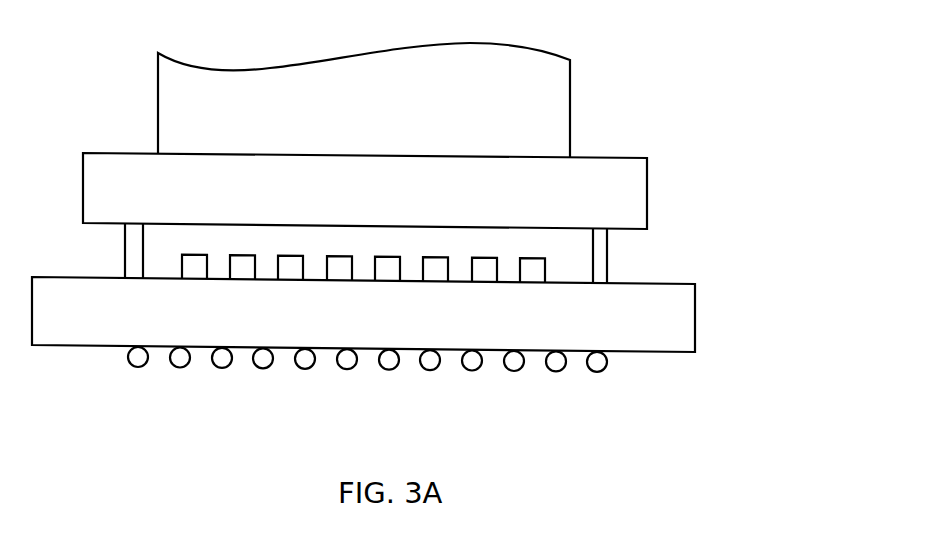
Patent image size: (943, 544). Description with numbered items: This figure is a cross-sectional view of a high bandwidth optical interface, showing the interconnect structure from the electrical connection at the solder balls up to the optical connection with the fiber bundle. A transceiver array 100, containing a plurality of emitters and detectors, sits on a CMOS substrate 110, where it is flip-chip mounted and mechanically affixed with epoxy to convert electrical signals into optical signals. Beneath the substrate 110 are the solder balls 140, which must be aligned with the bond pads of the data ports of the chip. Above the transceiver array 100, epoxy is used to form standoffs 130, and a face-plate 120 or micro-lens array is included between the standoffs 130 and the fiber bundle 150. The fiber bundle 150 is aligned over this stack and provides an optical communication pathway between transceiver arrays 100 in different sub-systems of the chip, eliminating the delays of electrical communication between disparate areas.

The transceiver array 100 is at (545, 273).
The CMOS substrate 110 is at (695, 328).
The face-plate 120 is at (607, 157).
The standoffs 130 is at (607, 248).
The solder balls 140 is at (603, 368).
The fiber bundle 150 is at (547, 53).